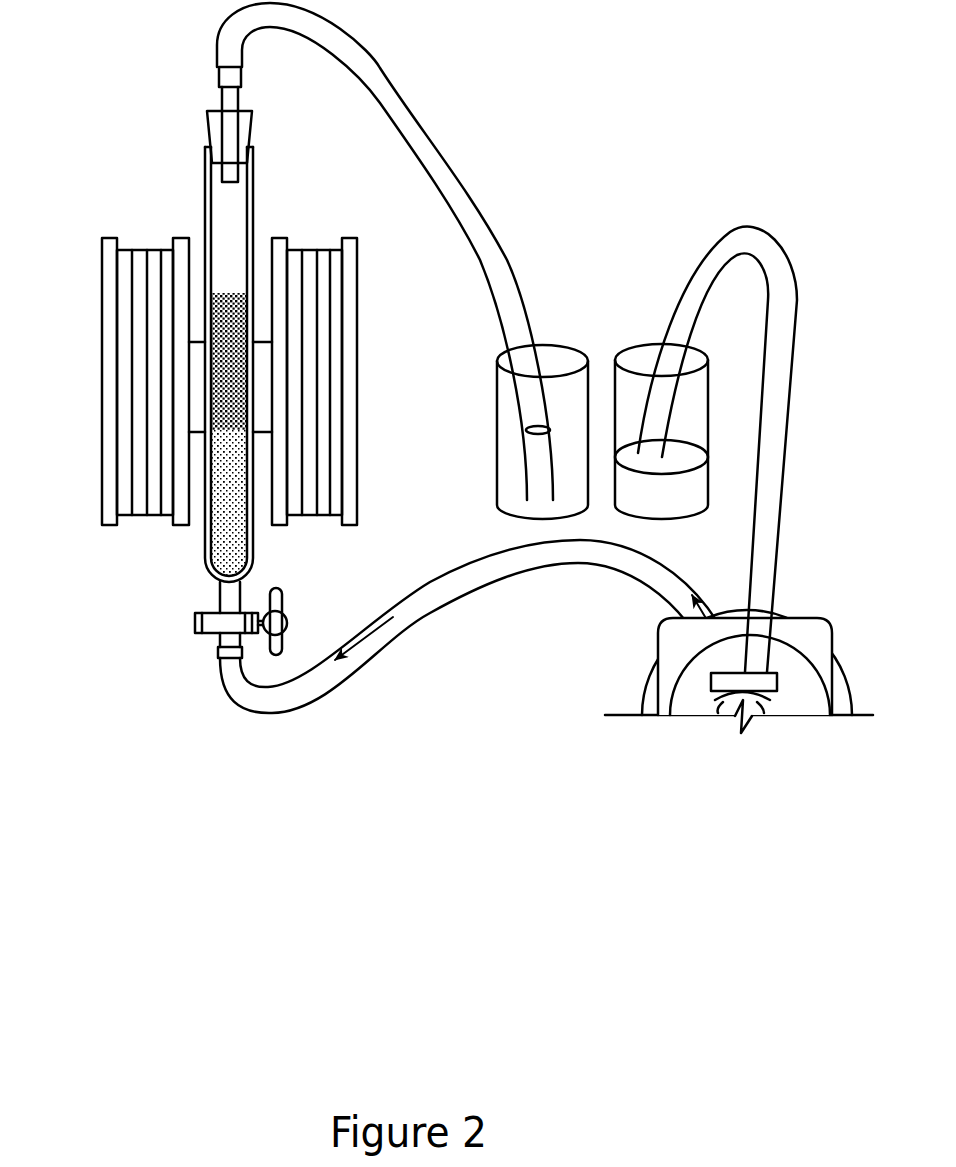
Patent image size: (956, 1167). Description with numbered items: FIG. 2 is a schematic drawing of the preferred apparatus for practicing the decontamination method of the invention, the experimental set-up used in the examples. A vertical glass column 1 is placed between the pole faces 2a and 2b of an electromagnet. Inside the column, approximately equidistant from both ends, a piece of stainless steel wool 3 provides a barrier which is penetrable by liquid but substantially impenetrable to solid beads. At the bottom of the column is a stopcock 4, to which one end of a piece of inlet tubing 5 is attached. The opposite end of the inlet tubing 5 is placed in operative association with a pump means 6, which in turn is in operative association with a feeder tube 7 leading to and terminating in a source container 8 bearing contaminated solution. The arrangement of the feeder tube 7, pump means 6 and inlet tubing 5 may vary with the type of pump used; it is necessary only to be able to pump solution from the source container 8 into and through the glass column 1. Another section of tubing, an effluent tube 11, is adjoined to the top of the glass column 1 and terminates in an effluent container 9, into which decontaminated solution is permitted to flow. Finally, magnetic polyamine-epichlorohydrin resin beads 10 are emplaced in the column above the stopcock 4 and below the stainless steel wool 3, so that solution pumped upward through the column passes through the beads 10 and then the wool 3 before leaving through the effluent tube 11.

The vertical glass column 1 is at (205, 163).
The pole face of electromagnet 2a is at (188, 340).
The pole face of electromagnet 2b is at (274, 312).
The stainless steel wool 3 is at (228, 292).
The stopcock 4 is at (208, 637).
The inlet tubing 5 is at (267, 718).
The pump means 6 is at (640, 690).
The feeder tube 7 is at (768, 535).
The source container 8 is at (712, 386).
The effluent container 9 is at (497, 418).
The magnetic polyamine-epichlorohydrin (MPE) resin beads 10 is at (235, 508).
The effluent tube 11 is at (403, 92).